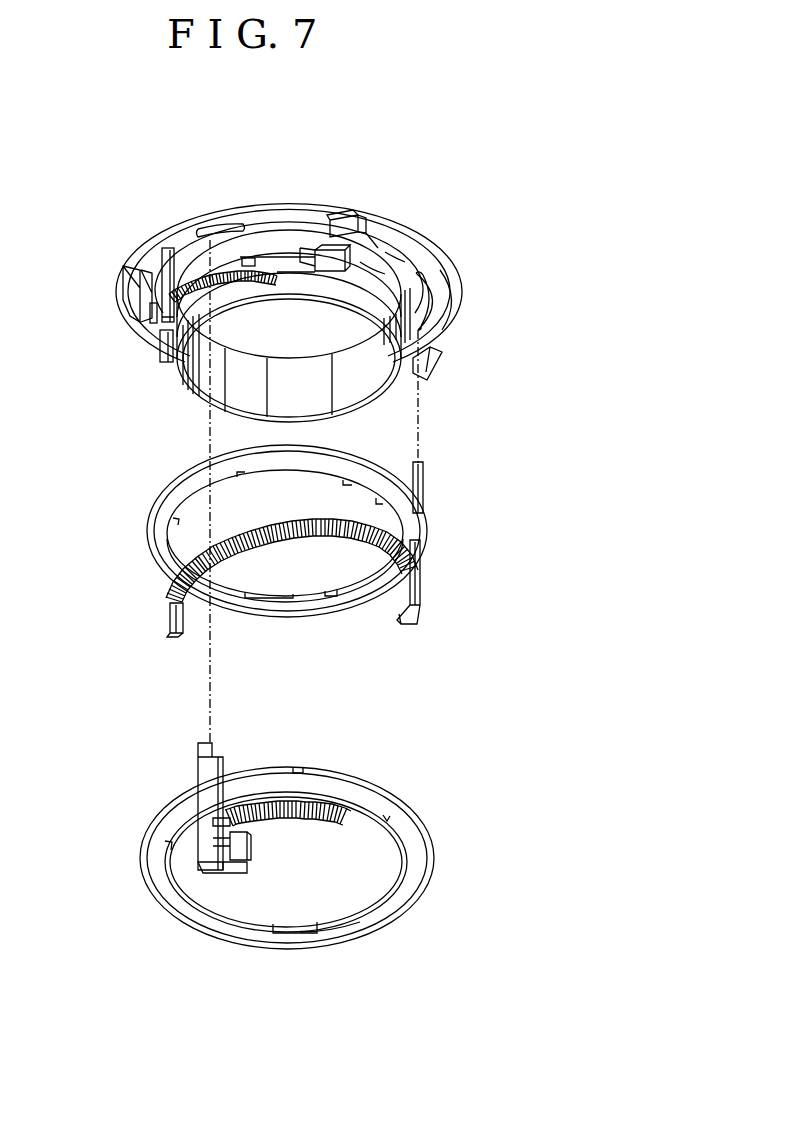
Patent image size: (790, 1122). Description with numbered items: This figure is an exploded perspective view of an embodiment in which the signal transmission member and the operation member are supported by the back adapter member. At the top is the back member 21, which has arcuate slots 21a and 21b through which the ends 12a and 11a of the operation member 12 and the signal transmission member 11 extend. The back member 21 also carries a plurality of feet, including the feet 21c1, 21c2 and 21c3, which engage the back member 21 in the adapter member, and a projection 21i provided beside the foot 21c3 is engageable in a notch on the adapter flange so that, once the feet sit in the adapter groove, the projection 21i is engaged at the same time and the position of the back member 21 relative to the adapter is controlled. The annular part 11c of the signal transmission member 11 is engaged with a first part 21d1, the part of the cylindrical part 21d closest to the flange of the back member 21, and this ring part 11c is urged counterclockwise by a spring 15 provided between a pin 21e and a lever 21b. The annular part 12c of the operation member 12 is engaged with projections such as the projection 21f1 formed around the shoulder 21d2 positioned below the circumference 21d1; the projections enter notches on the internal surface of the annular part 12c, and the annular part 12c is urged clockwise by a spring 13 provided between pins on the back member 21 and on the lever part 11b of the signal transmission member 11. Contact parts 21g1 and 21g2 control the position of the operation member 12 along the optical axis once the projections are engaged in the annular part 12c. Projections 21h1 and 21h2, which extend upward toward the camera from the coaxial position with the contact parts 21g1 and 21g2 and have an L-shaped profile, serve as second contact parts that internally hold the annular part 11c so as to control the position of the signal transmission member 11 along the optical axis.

The back member 21 is at (462, 325).
The pin 21e is at (167, 255).
The projection (second contact part) 21h2 is at (168, 345).
The projection 21i is at (150, 312).
The foot 21c3 is at (120, 312).
The arcuate slot / lever 21b is at (227, 228).
The contact part 21g1 is at (232, 272).
The projection 21f1 is at (250, 257).
The projection (second contact part) 21h1 is at (337, 256).
The shoulder 21d2 is at (315, 248).
The foot 21c1 is at (368, 230).
The first part of cylindrical part 21d1 is at (373, 267).
The cylindrical part 21d is at (395, 260).
The arcuate slot 21a is at (427, 282).
The contact part 21g2 is at (452, 289).
The foot 21c2 is at (433, 362).
The operation member 12 is at (427, 555).
The annular part 12c is at (182, 490).
The end 12a is at (422, 470).
The spring 15 is at (253, 540).
The signal transmission member 11 is at (440, 857).
The end 11a is at (198, 752).
The lever part 11b is at (208, 858).
The annular part 11c is at (377, 920).
The spring 13 is at (330, 806).